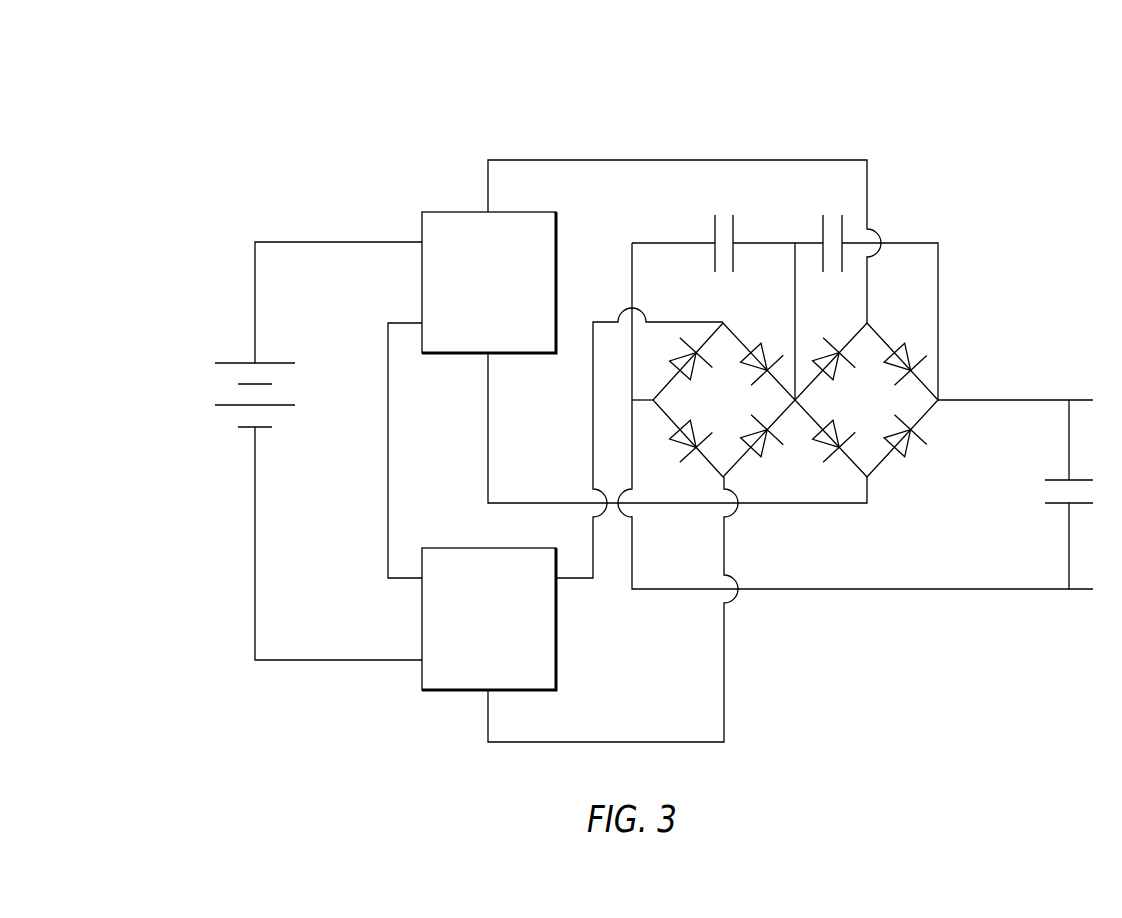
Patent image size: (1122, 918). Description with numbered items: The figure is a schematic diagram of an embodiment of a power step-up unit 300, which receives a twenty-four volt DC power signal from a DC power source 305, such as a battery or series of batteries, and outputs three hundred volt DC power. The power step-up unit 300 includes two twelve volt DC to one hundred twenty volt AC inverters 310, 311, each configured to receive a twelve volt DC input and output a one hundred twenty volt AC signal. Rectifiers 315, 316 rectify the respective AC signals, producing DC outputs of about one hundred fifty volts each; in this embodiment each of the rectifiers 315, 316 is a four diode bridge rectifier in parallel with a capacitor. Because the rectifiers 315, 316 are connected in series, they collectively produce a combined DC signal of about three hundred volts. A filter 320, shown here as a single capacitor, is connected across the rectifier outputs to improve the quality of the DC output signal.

The power step-up unit 300 is at (412, 92).
The DC power source 305 is at (190, 405).
The inverter 310 is at (435, 212).
The inverter 311 is at (435, 691).
The rectifier 315 is at (782, 458).
The rectifier 316 is at (918, 455).
The filter 320 is at (1062, 478).